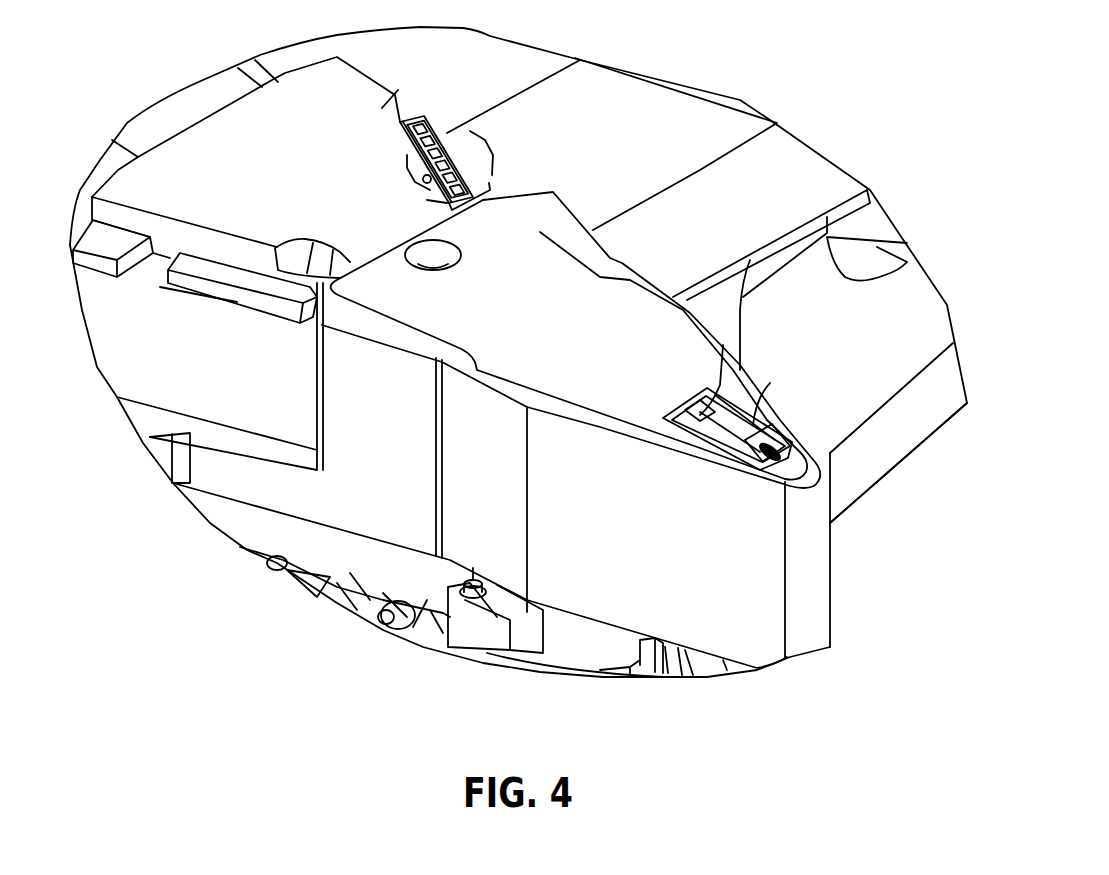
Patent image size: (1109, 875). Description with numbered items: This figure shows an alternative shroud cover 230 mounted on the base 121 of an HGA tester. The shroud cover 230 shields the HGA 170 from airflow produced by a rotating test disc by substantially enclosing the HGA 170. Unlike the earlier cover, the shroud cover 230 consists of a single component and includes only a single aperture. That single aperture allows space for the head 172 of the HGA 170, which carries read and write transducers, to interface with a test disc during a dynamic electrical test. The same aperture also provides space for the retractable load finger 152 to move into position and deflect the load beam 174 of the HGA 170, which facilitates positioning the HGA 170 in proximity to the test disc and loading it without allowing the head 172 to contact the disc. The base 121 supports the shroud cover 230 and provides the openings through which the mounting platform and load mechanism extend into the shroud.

The shroud cover 230 is at (607, 352).
The base 121 is at (632, 557).
The load finger 152 is at (720, 390).
The HGA 170 is at (748, 420).
The head 172 is at (770, 467).
The load beam 174 is at (693, 425).